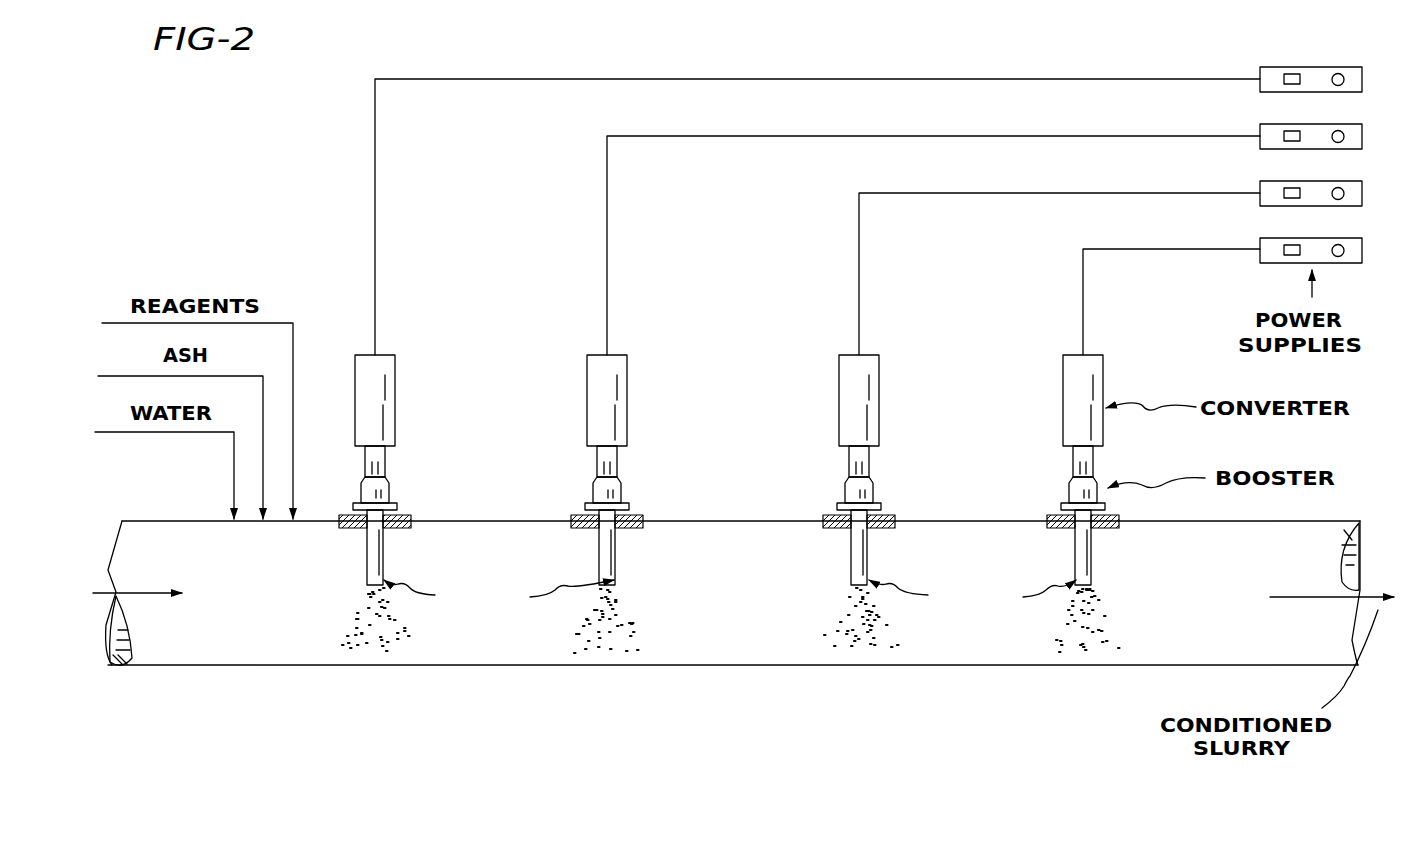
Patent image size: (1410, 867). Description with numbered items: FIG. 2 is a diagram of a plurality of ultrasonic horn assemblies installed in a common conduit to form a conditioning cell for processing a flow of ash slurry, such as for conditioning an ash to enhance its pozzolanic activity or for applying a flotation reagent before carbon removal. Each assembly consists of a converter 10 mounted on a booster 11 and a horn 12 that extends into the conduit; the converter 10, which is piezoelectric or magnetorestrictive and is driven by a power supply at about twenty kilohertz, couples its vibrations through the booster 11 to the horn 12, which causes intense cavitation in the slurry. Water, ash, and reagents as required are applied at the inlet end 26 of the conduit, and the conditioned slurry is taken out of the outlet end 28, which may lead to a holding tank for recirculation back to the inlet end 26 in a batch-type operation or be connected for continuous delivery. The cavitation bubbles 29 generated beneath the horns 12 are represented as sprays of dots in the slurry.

The converter 10 is at (587, 410).
The booster 11 is at (597, 490).
The horn 12 is at (598, 569).
The inlet end 26 is at (170, 540).
The outlet end 28 is at (1333, 545).
The cavitation bubbles 29 is at (1086, 641).